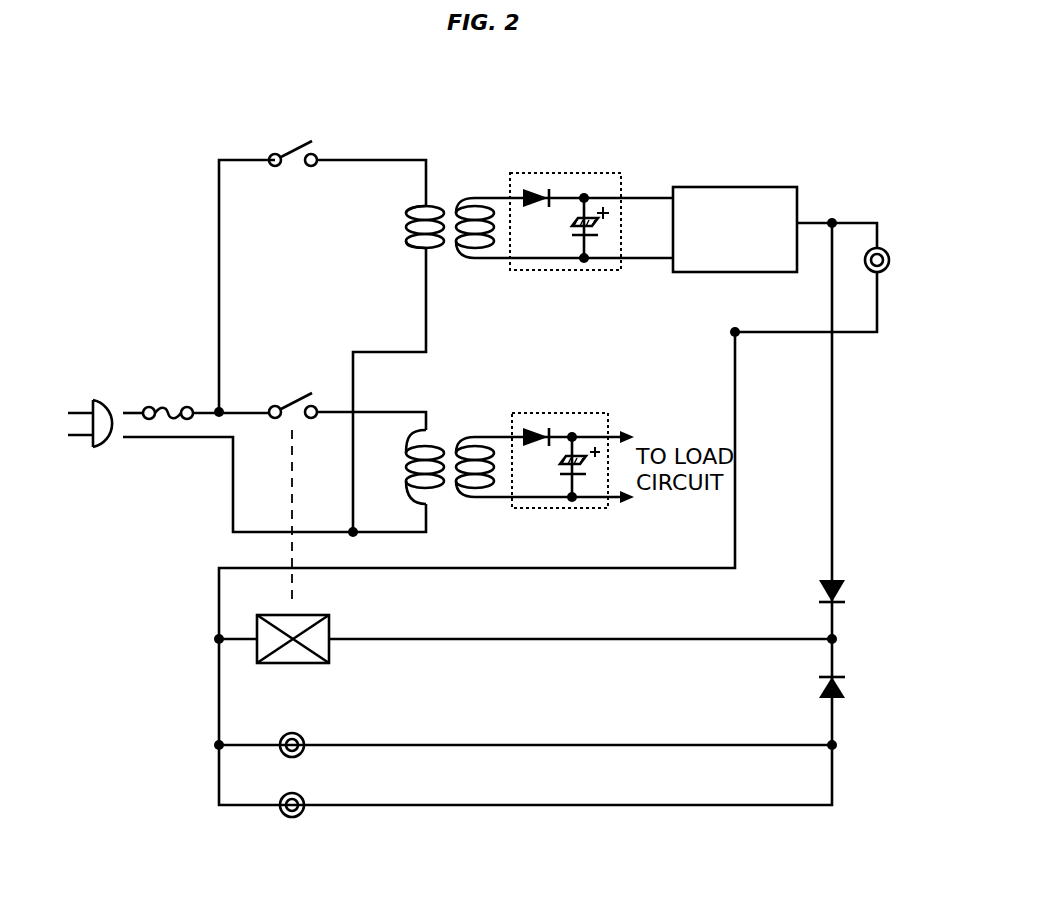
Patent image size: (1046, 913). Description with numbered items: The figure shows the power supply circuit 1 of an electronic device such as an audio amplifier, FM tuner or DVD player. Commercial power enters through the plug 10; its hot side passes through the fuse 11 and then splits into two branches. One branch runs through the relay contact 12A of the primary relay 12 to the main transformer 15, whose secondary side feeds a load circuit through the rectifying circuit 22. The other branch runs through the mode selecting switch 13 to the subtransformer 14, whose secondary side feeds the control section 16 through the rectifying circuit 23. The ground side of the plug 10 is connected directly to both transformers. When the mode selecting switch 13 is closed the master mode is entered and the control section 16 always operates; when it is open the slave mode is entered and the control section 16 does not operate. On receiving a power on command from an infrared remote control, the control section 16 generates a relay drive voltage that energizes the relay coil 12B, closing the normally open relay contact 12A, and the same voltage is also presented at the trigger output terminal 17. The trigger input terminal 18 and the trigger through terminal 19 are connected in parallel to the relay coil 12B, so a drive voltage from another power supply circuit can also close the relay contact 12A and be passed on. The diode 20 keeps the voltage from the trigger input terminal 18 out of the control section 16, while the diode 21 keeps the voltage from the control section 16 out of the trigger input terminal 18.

The power supply device 1 is at (128, 270).
The plug 10 is at (104, 400).
The fuse 11 is at (182, 406).
The primary relay 12 is at (210, 550).
The relay contact 12A is at (275, 405).
The relay coil 12B is at (330, 664).
The mode selecting switch 13 is at (318, 152).
The subtransformer 14 is at (448, 198).
The main transformer 15 is at (455, 437).
The control section 16 is at (797, 187).
The trigger output terminal 17 is at (888, 250).
The trigger input terminal 18 is at (287, 757).
The trigger through terminal 19 is at (288, 818).
The diode 20 is at (840, 584).
The diode 21 is at (843, 700).
The rectifying circuit 22 is at (608, 414).
The rectifying circuit 23 is at (621, 173).